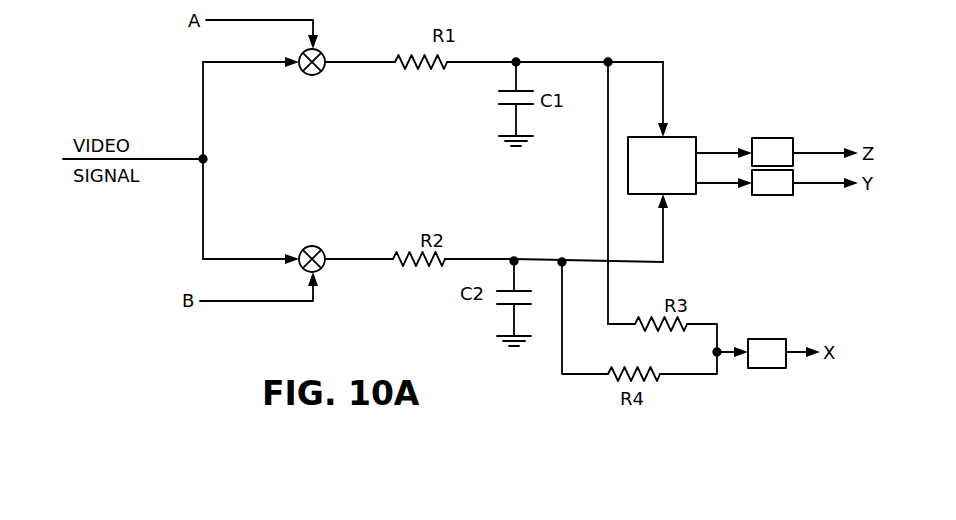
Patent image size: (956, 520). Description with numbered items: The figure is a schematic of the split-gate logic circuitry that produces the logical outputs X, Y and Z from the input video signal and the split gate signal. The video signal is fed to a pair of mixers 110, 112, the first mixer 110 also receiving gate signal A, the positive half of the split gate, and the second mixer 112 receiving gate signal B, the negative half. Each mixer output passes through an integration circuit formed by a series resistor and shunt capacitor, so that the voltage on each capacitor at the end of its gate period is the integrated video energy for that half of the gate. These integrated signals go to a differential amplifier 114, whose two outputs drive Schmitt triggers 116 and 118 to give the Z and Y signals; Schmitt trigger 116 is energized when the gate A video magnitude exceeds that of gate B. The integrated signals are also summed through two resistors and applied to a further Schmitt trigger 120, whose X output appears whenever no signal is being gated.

The mixer 110 is at (324, 52).
The mixer 112 is at (324, 249).
The differential amplifier 114 is at (668, 134).
The Schmitt trigger 116 is at (781, 137).
The Schmitt trigger 118 is at (776, 195).
The Schmitt trigger 120 is at (766, 369).